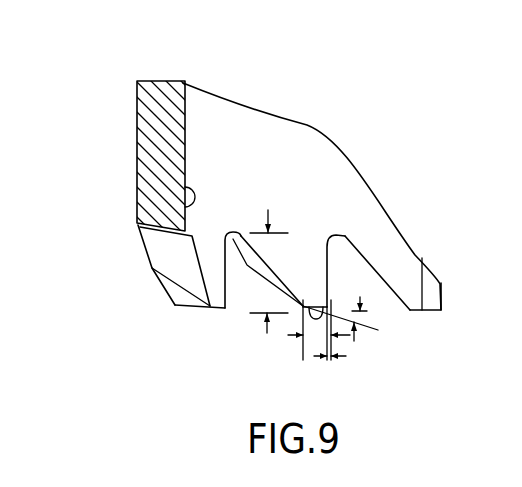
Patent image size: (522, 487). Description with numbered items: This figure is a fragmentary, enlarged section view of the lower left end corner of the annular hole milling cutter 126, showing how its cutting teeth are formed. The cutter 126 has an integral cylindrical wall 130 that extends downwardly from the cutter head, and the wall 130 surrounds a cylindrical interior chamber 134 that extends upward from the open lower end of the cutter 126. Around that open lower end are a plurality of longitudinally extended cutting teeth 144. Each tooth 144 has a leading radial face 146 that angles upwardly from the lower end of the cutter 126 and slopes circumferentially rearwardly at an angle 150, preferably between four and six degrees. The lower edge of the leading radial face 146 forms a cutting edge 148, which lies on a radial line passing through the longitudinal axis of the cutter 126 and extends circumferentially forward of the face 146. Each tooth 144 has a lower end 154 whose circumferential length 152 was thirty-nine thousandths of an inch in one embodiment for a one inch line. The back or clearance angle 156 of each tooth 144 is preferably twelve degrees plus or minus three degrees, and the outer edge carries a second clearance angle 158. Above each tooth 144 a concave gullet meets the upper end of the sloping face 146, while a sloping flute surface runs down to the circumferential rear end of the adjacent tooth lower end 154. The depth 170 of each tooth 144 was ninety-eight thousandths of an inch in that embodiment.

The annular hole milling cutter 126 is at (132, 88).
The cylindrical wall 130 is at (137, 139).
The cylindrical interior chamber 134 is at (186, 188).
The cutting teeth 144 is at (212, 263).
The leading radial face 146 is at (326, 278).
The cutting edge 148 is at (202, 313).
The angle 150 is at (331, 358).
The circumferential length 152 is at (310, 350).
The lower end 154 is at (210, 310).
The back or clearance angle 156 is at (365, 327).
The outer edge second clearance angle 158 is at (173, 297).
The depth 170 is at (268, 212).